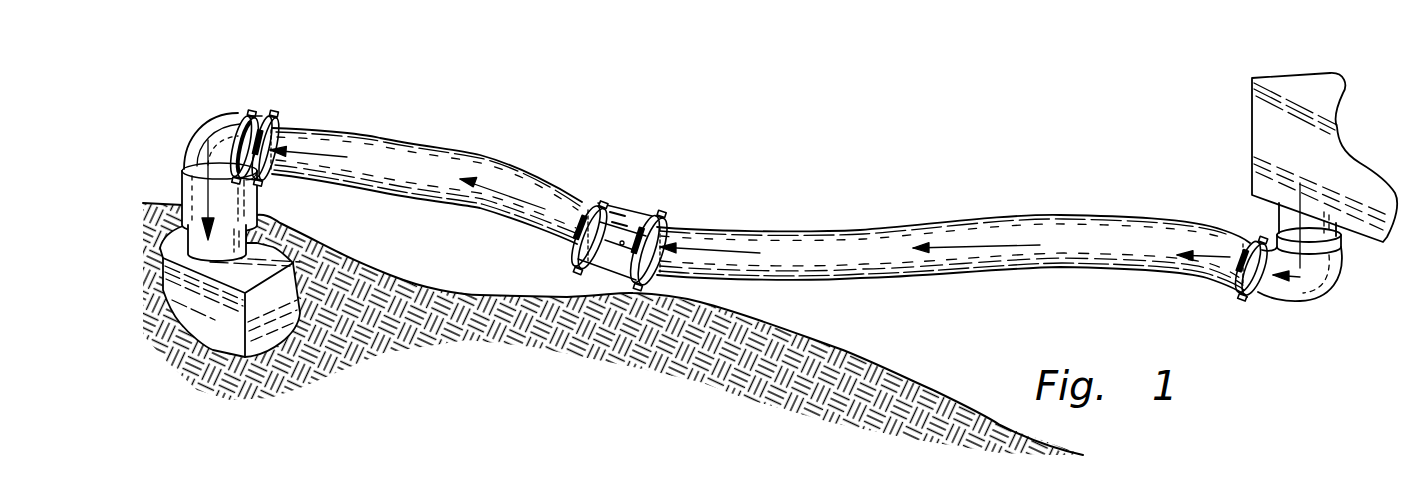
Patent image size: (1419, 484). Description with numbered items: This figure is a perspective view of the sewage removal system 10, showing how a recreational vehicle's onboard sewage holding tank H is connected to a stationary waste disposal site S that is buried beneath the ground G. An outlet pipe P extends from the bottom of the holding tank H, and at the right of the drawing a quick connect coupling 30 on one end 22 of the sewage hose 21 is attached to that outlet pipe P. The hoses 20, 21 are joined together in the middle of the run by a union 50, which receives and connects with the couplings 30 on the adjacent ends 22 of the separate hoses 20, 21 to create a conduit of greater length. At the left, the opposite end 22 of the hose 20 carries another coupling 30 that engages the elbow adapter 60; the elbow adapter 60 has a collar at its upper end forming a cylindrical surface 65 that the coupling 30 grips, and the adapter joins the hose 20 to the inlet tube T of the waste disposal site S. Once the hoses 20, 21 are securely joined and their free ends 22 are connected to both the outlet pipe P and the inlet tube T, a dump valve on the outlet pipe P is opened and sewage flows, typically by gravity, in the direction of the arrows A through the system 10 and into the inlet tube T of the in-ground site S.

The sewage removal system 10 is at (1003, 107).
The sewage hose 20 is at (447, 147).
The sewage hose 21 is at (860, 227).
The hose end 22 is at (278, 130).
The quick connect coupling 30 is at (267, 112).
The union 50 is at (640, 217).
The elbow adapter 60 is at (208, 121).
The cylindrical surface 65 is at (240, 112).
The arrows A is at (323, 153).
The inlet tube T is at (230, 235).
The stationary waste disposal site S is at (202, 325).
The ground G is at (843, 350).
The onboard sewage holding tank H is at (1323, 133).
The outlet pipe P is at (1340, 227).